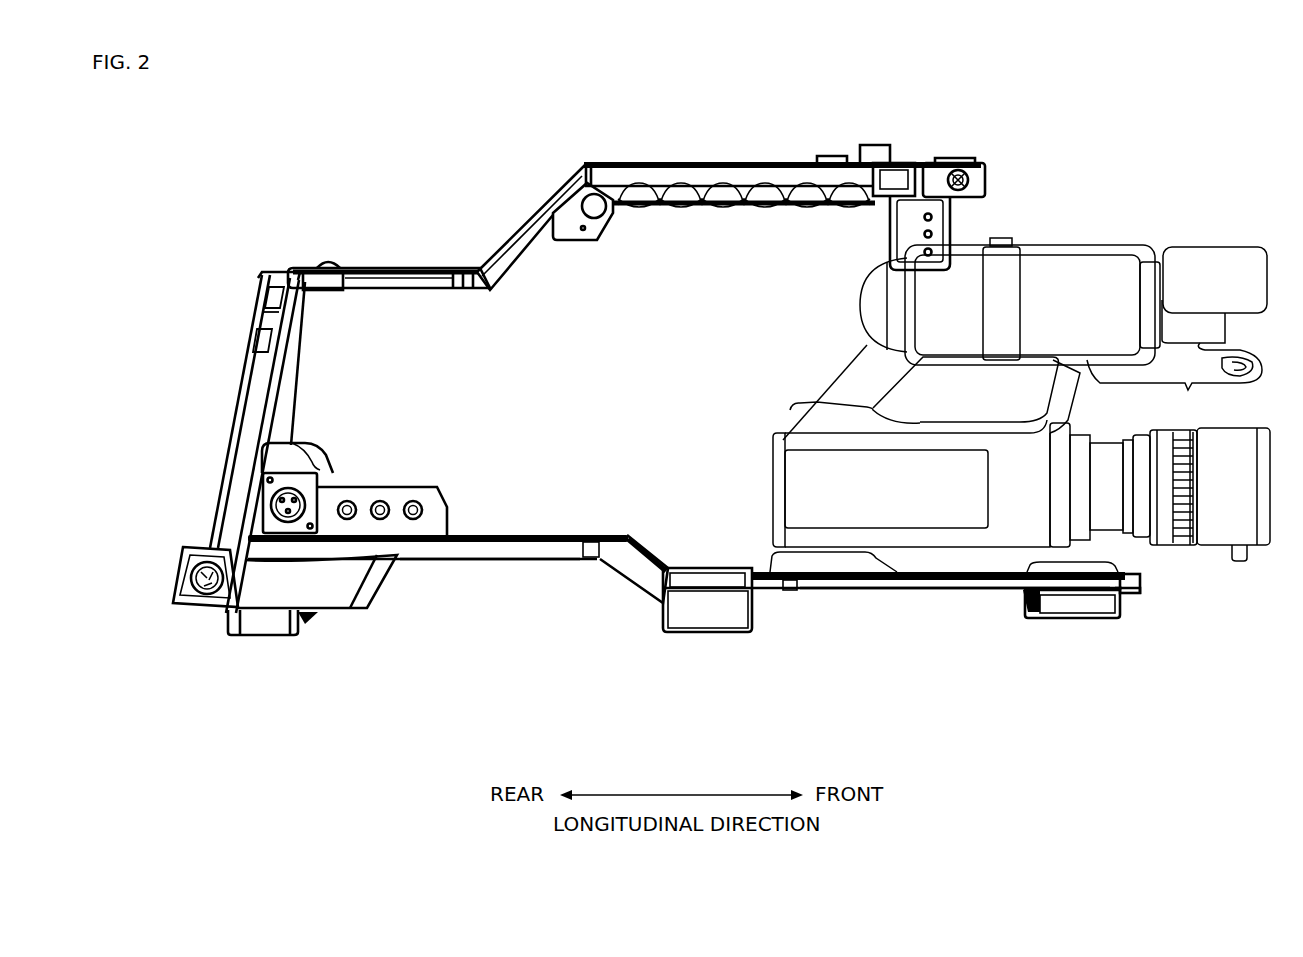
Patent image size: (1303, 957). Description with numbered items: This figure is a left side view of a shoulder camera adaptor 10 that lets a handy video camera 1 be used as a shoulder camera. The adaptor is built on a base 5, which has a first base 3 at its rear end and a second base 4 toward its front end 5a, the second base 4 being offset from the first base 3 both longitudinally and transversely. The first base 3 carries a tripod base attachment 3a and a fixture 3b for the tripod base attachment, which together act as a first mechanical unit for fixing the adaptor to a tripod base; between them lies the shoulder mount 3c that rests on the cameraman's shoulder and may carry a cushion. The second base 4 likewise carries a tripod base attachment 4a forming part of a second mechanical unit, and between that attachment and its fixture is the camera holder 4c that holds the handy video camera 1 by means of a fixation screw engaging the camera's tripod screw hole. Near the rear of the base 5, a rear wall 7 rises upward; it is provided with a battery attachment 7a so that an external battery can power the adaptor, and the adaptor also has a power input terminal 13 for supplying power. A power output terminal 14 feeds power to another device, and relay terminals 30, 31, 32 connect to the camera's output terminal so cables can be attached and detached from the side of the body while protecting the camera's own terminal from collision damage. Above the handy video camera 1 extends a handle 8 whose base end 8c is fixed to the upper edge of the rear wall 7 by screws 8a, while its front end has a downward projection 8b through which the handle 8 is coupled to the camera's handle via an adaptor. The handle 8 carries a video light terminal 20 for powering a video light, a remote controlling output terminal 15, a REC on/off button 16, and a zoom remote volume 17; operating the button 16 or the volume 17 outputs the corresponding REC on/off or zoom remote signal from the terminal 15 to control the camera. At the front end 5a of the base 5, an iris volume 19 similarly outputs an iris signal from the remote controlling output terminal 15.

The handy video camera 1 is at (1042, 224).
The first base 3 is at (518, 613).
The tripod base attachment 3a is at (688, 622).
The fixture for the tripod base attachment 3b is at (262, 633).
The shoulder mount 3c is at (477, 560).
The second base 4 is at (822, 622).
The tripod base attachment 4a is at (1078, 612).
The camera holder 4c is at (920, 590).
The base 5 is at (750, 706).
The front end 5a is at (1130, 592).
The rear wall 7 is at (292, 368).
The battery attachment 7a is at (238, 410).
The handle 8 is at (727, 175).
The screws 8a is at (330, 262).
The projection 8b is at (900, 222).
The base end 8c is at (330, 290).
The shoulder camera adaptor 10 is at (372, 200).
The power input terminal 13 is at (181, 605).
The power output terminal 14 is at (306, 471).
The remote controlling output terminal 15 is at (975, 178).
The REC on/off button 16 is at (833, 155).
The zoom remote volume 17 is at (872, 143).
The iris volume 19 is at (1140, 578).
The video light terminal 20 is at (907, 168).
The relay terminal 30 is at (413, 500).
The relay terminal 31 is at (380, 500).
The relay terminal 32 is at (347, 500).